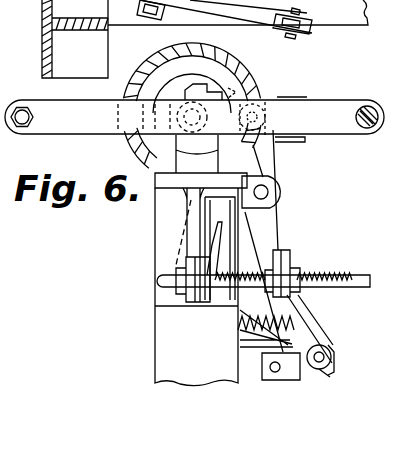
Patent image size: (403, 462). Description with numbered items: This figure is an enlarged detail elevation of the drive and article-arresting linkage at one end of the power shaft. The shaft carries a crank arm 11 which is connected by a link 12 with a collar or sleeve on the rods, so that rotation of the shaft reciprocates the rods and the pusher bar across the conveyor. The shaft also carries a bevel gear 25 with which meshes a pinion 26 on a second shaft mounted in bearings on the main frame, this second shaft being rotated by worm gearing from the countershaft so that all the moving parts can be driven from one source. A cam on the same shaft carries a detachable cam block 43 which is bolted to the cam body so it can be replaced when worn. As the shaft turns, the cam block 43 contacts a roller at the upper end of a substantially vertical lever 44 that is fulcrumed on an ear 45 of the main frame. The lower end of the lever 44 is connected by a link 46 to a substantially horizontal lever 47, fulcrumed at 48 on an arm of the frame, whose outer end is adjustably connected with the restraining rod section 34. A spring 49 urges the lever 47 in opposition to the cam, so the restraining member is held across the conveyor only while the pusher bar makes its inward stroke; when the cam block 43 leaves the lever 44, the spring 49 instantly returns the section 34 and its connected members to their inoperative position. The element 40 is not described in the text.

The crank arm 11 is at (50, 150).
The link 12 is at (372, 93).
The bevel gear 25 is at (223, 68).
The pinion 26 is at (270, 92).
The restraining rod section 34 is at (353, 273).
The arm 40 is at (312, 27).
The cam block 43 is at (233, 88).
The vertical lever 44 is at (335, 219).
The ear 45 is at (272, 190).
The link 46 is at (292, 374).
The horizontal lever 47 is at (333, 360).
The fulcrum 48 is at (141, 12).
The spring 49 is at (75, 39).